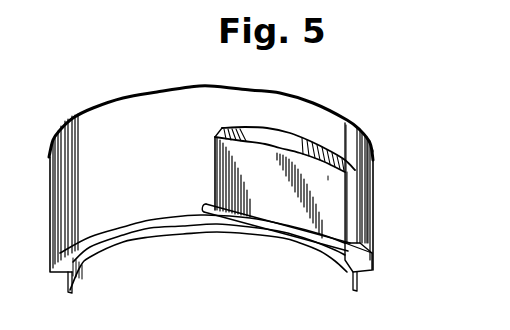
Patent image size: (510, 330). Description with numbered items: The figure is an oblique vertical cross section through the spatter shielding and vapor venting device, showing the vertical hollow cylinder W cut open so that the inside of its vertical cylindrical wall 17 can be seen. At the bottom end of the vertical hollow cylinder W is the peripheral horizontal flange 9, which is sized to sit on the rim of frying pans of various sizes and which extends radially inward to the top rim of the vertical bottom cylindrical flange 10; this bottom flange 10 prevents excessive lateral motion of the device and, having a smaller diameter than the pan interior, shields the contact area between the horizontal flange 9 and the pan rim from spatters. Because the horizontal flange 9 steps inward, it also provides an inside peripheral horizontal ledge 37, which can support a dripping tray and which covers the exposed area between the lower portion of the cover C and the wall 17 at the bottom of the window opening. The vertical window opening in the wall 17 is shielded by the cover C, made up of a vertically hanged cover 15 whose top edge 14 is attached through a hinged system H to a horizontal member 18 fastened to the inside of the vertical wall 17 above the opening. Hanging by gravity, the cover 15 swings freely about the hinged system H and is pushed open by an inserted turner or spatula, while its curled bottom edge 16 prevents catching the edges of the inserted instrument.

The vertical hollow cylinder W is at (71, 113).
The cover C is at (373, 150).
The hinged system H is at (313, 180).
The top edge 14 is at (288, 158).
The vertically hanged cover 15 is at (328, 178).
The bottom edge 16 is at (373, 237).
The vertical cylindrical wall 17 is at (374, 192).
The horizontal member 18 is at (282, 138).
The inside peripheral horizontal ledge 37 is at (362, 258).
The peripheral horizontal flange 9 is at (365, 276).
The vertical bottom cylindrical flange 10 is at (358, 284).